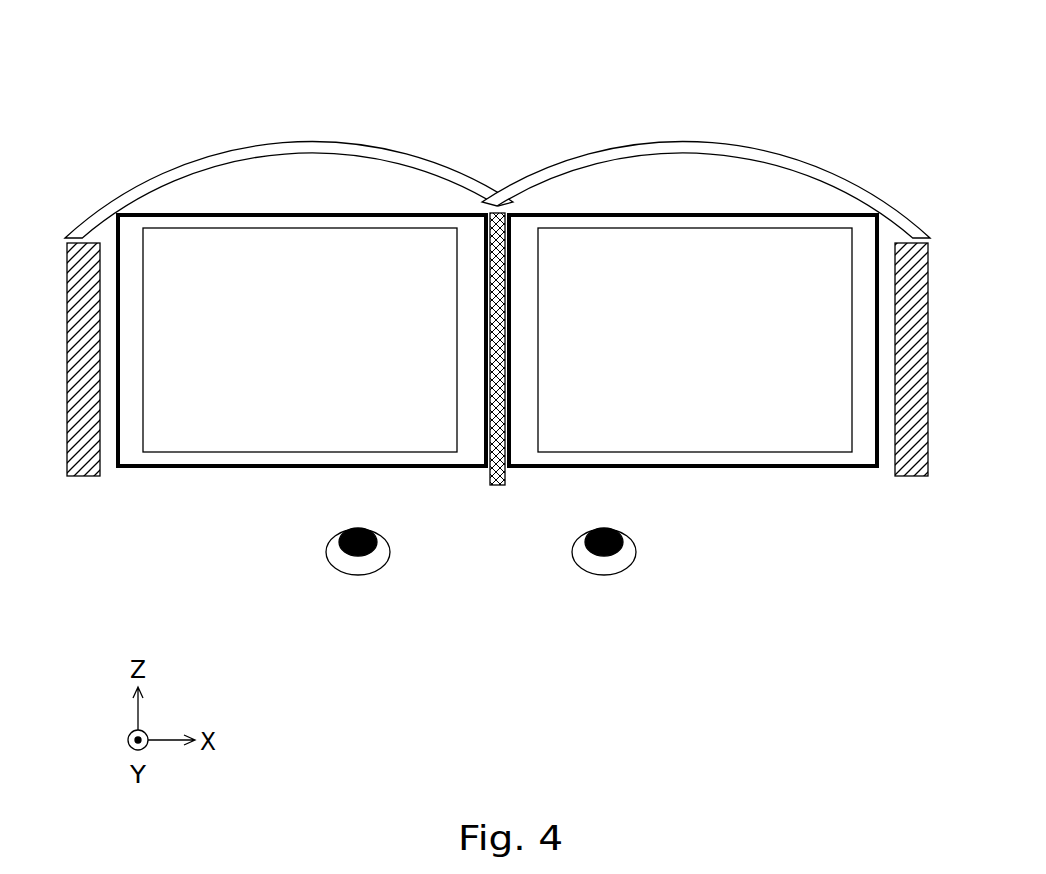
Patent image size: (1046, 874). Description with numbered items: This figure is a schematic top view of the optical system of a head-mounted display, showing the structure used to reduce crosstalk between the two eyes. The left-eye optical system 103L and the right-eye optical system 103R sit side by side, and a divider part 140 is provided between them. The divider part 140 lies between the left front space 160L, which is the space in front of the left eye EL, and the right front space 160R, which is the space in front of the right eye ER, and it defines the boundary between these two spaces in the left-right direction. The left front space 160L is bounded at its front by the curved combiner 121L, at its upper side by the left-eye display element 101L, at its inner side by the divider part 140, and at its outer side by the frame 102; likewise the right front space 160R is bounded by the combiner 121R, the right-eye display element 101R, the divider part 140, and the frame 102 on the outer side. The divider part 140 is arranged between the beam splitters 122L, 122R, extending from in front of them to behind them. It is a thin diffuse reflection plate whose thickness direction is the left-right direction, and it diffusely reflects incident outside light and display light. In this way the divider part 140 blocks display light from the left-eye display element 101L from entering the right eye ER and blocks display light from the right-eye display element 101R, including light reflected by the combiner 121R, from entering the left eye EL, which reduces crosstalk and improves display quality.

The left-eye optical system 103L is at (289, 285).
The right-eye optical system 103R is at (706, 286).
The left front space 160L is at (289, 139).
The right front space 160R is at (706, 139).
The combiner 121L is at (145, 186).
The combiner 121R is at (850, 186).
The beam splitter 122L is at (220, 467).
The beam splitter 122R is at (792, 467).
The left-eye display element 101L is at (295, 435).
The right-eye display element 101R is at (682, 432).
The frame 102 is at (93, 477).
The divider part 140 is at (488, 487).
The left eye EL is at (345, 572).
The right eye ER is at (627, 570).